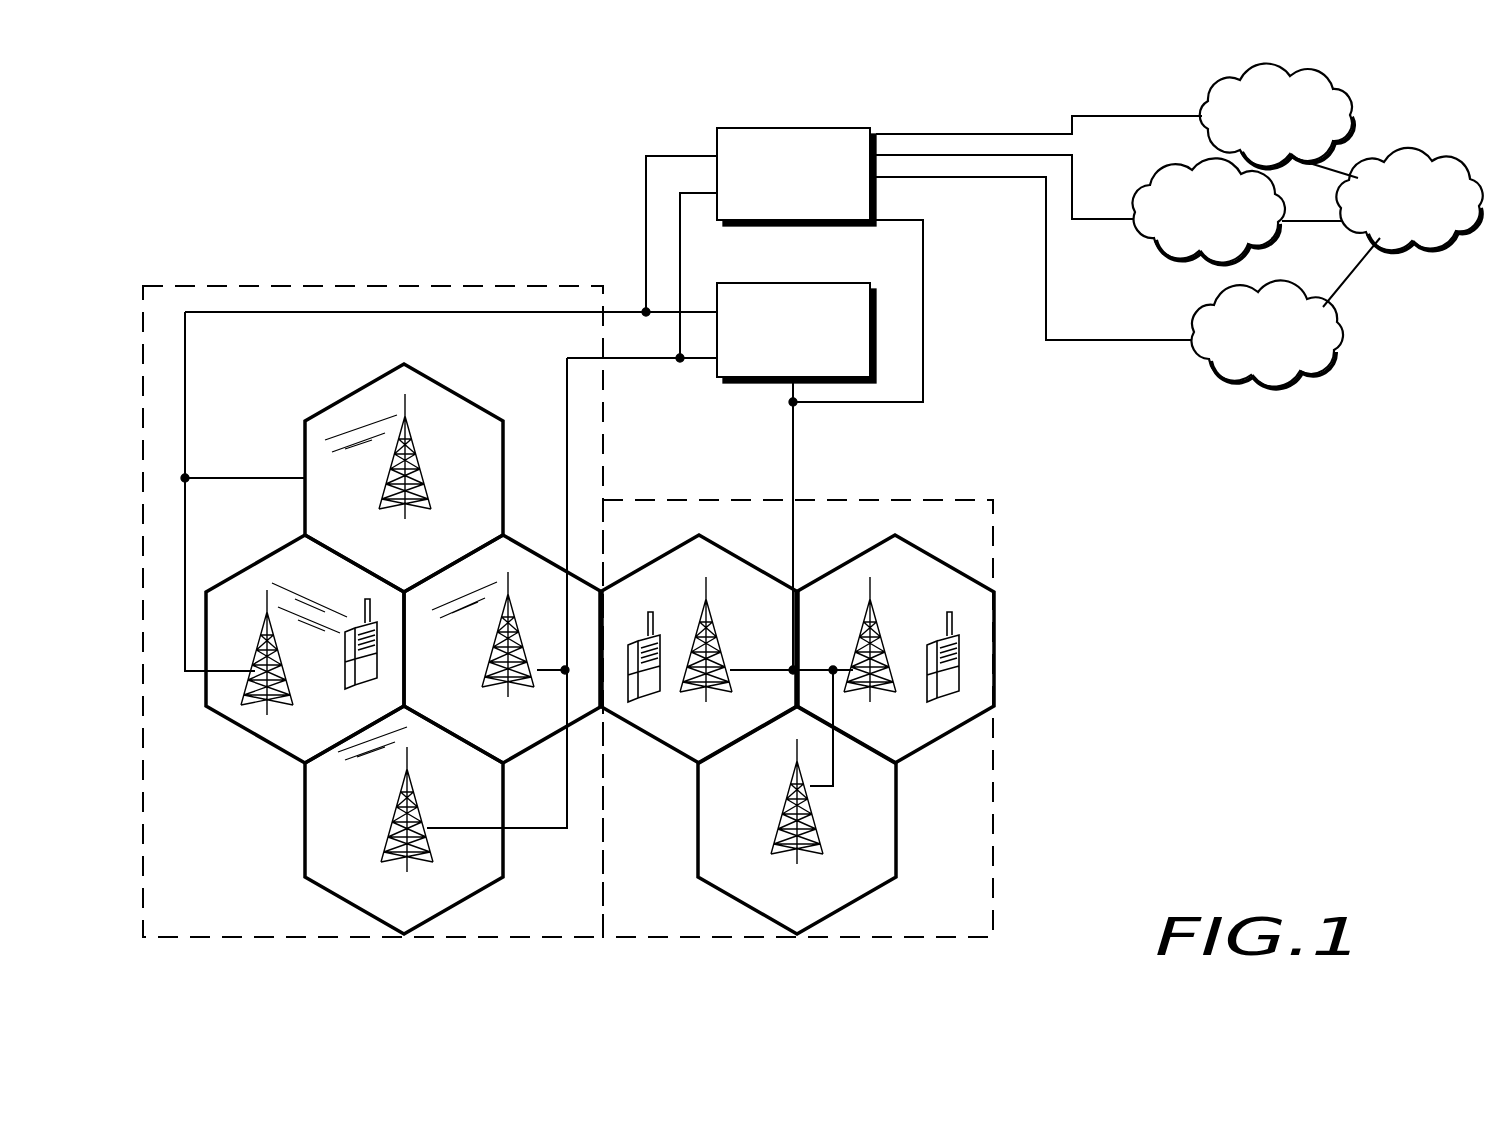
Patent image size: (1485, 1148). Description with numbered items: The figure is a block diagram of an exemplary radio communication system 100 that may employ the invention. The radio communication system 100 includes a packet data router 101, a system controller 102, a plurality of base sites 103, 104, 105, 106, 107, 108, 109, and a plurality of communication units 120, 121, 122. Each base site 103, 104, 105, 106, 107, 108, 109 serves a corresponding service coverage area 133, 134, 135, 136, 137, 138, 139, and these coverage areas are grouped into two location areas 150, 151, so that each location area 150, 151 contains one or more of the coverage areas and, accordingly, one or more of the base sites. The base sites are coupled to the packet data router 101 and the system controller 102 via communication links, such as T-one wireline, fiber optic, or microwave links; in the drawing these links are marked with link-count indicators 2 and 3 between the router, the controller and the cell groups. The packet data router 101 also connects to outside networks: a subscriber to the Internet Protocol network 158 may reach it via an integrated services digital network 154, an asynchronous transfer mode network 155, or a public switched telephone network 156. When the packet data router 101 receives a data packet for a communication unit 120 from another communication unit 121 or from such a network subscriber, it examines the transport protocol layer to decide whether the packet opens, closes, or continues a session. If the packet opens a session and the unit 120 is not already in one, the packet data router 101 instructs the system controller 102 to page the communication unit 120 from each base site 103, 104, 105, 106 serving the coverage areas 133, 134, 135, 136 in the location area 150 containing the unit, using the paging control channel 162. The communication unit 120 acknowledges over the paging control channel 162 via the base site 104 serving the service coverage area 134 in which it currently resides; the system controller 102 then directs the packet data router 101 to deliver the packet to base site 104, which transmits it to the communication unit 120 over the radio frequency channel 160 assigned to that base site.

The radio communication system 100 is at (1012, 834).
The packet data router 101 is at (745, 127).
The system controller 102 is at (745, 283).
The base site 103 is at (418, 462).
The base site 104 is at (255, 637).
The base site 105 is at (490, 637).
The base site 106 is at (393, 830).
The base site 107 is at (715, 627).
The base site 108 is at (890, 665).
The base site 109 is at (790, 852).
The communication unit 120 is at (343, 687).
The communication unit 121 is at (630, 645).
The communication unit 122 is at (928, 698).
The service coverage area 133 is at (440, 390).
The service coverage area 134 is at (250, 735).
The service coverage area 135 is at (523, 540).
The service coverage area 136 is at (492, 885).
The service coverage area 137 is at (643, 732).
The service coverage area 138 is at (930, 548).
The service coverage area 139 is at (873, 888).
The location area 150 is at (490, 937).
The location area 151 is at (965, 937).
The integrated services digital network (ISDN) 154 is at (1338, 323).
The asynchronous transfer mode (ATM) network 155 is at (1270, 243).
The public switched telephone network (PSTN) 156 is at (1352, 107).
The Internet Protocol (IP) network 158 is at (1413, 247).
The radio frequency communication resource (channel) 160 is at (307, 602).
The paging control channel 162 is at (363, 753).
The link 2 is at (633, 348).
The link 3 is at (800, 453).